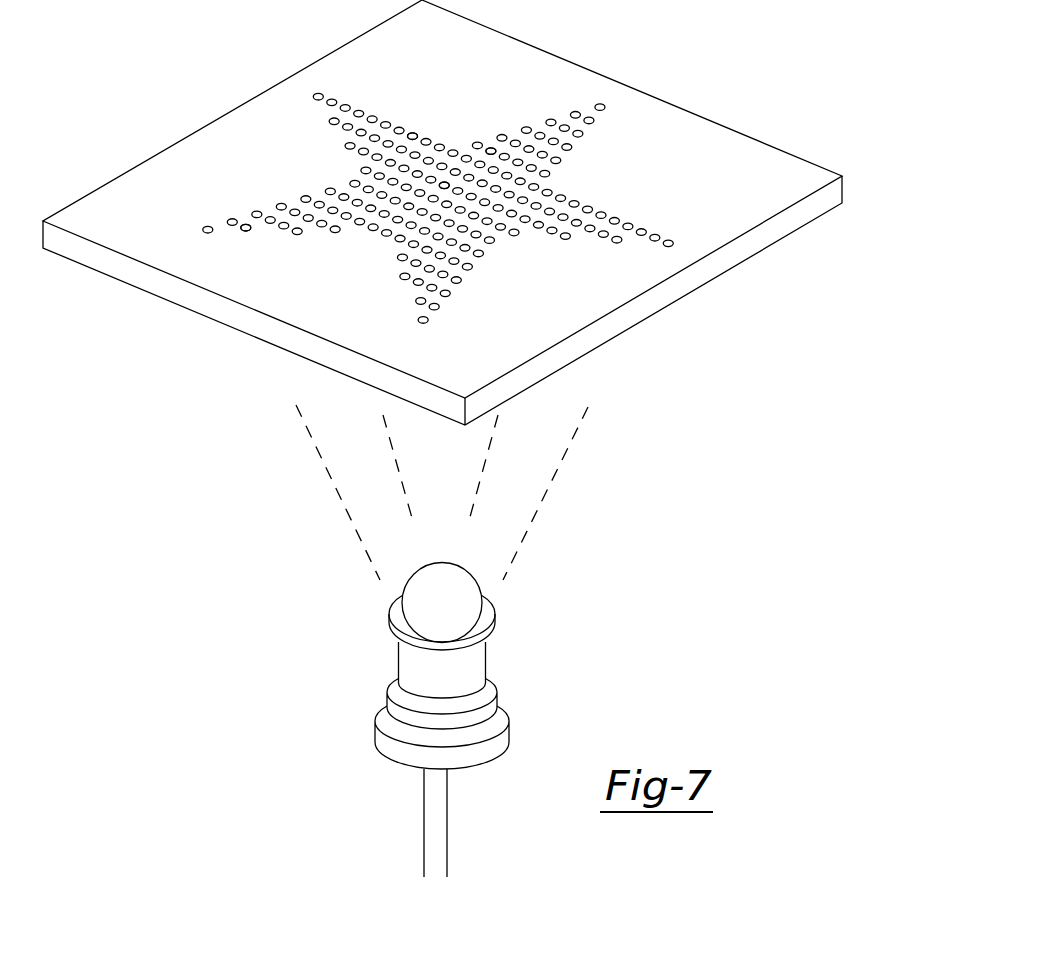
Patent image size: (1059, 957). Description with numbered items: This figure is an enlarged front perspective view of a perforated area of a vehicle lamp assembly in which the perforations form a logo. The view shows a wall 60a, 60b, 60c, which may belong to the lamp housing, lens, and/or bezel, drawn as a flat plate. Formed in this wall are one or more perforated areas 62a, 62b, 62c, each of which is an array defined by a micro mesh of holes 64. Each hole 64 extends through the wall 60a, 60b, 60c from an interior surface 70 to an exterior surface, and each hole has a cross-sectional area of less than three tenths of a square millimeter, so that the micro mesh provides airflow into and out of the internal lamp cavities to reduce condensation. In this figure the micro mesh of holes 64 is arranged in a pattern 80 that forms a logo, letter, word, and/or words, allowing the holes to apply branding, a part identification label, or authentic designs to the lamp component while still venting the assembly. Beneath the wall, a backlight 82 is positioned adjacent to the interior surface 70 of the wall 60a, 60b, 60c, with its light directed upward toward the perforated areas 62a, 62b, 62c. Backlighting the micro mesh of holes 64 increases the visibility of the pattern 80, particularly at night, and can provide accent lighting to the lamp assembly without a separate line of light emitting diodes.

The wall 60a is at (776, 239).
The wall 60b is at (442, 212).
The wall 60c is at (442, 212).
The perforated area 62a is at (557, 94).
The perforated area 62b is at (471, 196).
The perforated area 62c is at (471, 196).
The hole 64 is at (445, 182).
The interior surface 70 is at (649, 322).
The pattern 80 is at (242, 238).
The backlight 82 is at (466, 650).